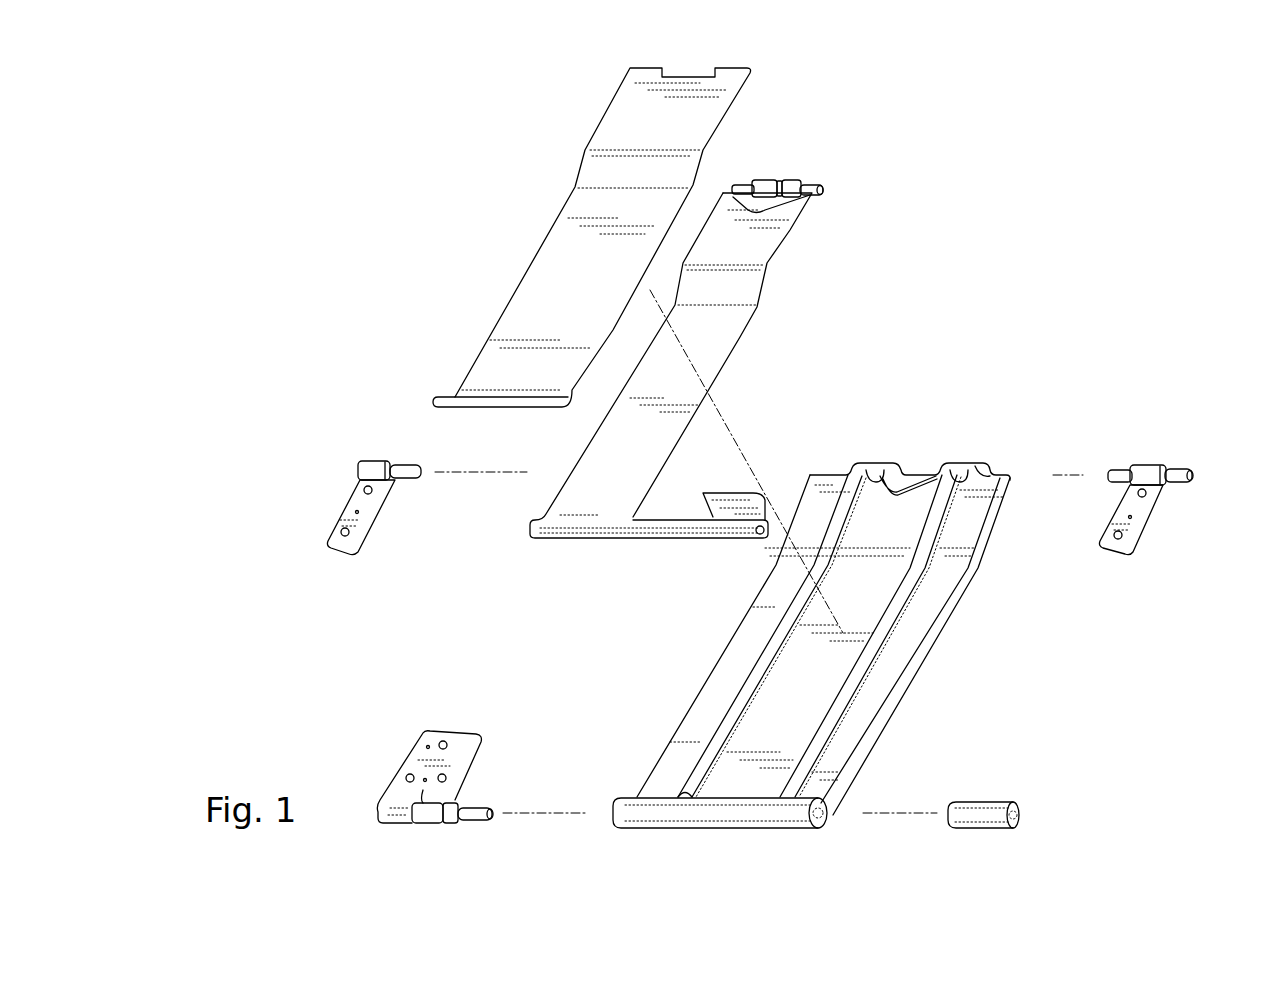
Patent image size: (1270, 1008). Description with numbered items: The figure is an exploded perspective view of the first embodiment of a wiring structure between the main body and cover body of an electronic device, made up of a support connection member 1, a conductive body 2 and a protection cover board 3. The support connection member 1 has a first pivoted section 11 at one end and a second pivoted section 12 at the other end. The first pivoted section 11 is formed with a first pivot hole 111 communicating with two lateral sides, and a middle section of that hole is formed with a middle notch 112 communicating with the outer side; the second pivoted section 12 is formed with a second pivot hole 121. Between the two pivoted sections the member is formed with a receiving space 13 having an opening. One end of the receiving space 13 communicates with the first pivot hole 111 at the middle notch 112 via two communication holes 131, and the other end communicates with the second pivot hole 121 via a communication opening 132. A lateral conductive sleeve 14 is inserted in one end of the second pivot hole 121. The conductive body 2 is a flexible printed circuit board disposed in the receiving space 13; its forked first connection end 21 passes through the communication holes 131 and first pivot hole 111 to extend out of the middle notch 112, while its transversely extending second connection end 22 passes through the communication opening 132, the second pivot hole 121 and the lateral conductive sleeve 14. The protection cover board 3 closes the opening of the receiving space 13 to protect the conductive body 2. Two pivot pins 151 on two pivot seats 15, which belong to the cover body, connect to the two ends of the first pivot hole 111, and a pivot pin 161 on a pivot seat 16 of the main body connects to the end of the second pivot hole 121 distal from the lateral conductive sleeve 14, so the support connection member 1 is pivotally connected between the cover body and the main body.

The support connection member 1 is at (908, 690).
The first pivoted section 11 is at (983, 455).
The first pivot hole 111 is at (1000, 470).
The middle notch 112 is at (920, 468).
The second pivoted section 12 is at (680, 795).
The second pivot hole 121 is at (855, 808).
The receiving space 13 is at (880, 625).
The communication holes 131 is at (958, 463).
The communication opening 132 is at (700, 790).
The lateral conductive sleeve 14 is at (983, 802).
The pivot seats 15 is at (343, 505).
The pivot pins 151 is at (408, 458).
The pivot seat 16 is at (417, 767).
The pivot pin 161 is at (477, 800).
The conductive body 2 is at (722, 343).
The first connection end 21 is at (797, 172).
The second connection end 22 is at (703, 490).
The protection cover board 3 is at (547, 272).